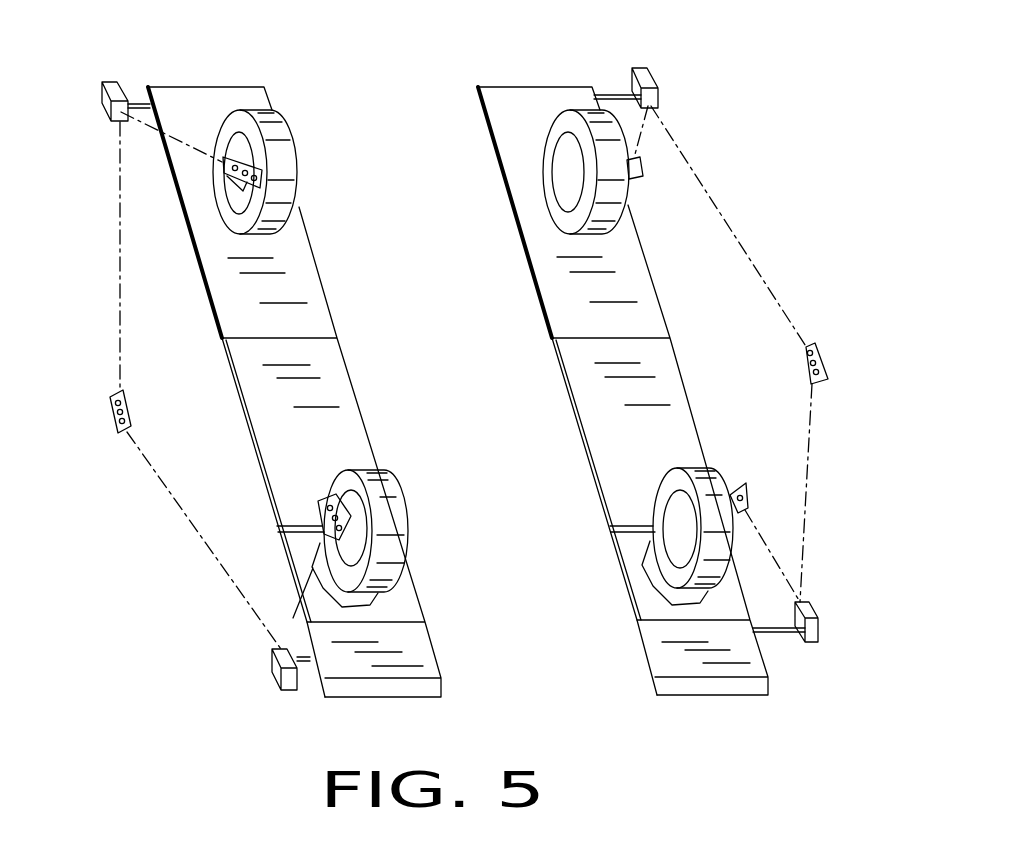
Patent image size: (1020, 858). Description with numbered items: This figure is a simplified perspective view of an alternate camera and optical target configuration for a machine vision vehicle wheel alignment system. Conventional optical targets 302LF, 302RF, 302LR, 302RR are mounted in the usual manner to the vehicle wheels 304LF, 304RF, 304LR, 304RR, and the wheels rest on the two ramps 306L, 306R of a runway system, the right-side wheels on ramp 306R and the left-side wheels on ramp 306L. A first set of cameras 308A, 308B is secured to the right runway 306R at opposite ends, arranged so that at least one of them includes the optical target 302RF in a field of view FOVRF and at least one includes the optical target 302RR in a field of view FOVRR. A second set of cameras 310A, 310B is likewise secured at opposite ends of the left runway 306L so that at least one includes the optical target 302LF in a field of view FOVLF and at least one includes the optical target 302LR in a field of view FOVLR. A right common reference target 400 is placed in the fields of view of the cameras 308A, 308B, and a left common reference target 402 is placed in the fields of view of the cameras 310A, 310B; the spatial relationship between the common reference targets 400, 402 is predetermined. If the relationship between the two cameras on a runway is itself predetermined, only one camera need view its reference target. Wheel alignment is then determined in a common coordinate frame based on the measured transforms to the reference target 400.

The optical target 302RR is at (262, 171).
The optical target 302RF is at (318, 502).
The optical target 302LR is at (642, 167).
The optical target 302LF is at (748, 487).
The wheel 304RR is at (282, 203).
The wheel 304RF is at (395, 519).
The wheel 304LR is at (598, 213).
The wheel 304LF is at (713, 563).
The ramp 306R is at (248, 98).
The ramp 306L is at (527, 98).
The camera 308A is at (271, 682).
The camera 308B is at (102, 87).
The camera 310A is at (818, 613).
The camera 310B is at (653, 72).
The right common reference target 400 is at (110, 414).
The left common reference target 402 is at (863, 347).
The field of view FOVRR is at (186, 140).
The field of view FOVRF is at (288, 625).
The field of view FOVLR is at (638, 142).
The field of view FOVLF is at (765, 545).